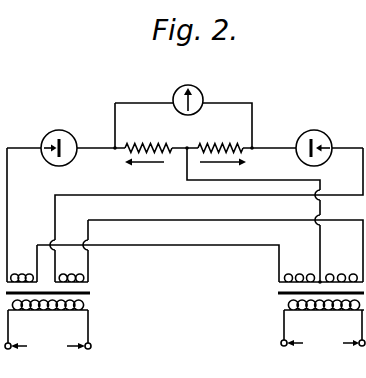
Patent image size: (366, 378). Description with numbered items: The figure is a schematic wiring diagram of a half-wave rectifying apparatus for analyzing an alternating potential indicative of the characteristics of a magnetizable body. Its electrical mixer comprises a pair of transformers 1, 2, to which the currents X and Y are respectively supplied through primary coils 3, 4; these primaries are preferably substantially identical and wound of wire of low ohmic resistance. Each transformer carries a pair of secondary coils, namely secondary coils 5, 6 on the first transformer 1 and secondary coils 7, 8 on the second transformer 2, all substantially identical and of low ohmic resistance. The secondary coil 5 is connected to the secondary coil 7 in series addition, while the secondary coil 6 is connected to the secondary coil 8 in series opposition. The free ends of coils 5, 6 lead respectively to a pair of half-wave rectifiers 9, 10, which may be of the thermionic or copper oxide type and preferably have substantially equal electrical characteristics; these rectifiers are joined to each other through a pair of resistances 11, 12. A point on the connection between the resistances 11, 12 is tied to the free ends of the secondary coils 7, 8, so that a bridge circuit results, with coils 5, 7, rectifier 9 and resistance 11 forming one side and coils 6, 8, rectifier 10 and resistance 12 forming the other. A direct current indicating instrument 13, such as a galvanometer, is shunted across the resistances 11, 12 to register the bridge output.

The transformer 1 is at (93, 292).
The transformer 2 is at (276, 292).
The primary coil 3 is at (48, 328).
The primary coil 4 is at (323, 326).
The secondary coil 5 is at (24, 265).
The secondary coil 6 is at (73, 265).
The secondary coil 7 is at (305, 258).
The secondary coil 8 is at (347, 266).
The half-wave rectifier 9 is at (60, 130).
The half-wave rectifier 10 is at (325, 123).
The resistance 11 is at (158, 139).
The resistance 12 is at (232, 139).
The direct current indicating instrument 13 is at (184, 116).